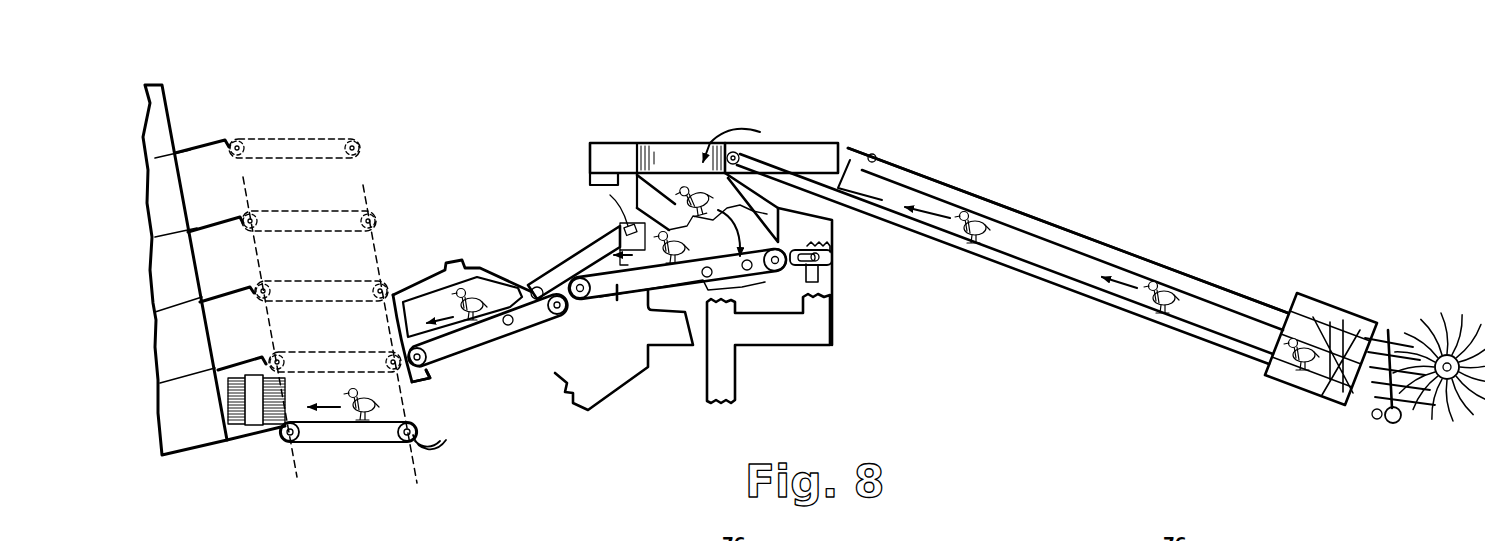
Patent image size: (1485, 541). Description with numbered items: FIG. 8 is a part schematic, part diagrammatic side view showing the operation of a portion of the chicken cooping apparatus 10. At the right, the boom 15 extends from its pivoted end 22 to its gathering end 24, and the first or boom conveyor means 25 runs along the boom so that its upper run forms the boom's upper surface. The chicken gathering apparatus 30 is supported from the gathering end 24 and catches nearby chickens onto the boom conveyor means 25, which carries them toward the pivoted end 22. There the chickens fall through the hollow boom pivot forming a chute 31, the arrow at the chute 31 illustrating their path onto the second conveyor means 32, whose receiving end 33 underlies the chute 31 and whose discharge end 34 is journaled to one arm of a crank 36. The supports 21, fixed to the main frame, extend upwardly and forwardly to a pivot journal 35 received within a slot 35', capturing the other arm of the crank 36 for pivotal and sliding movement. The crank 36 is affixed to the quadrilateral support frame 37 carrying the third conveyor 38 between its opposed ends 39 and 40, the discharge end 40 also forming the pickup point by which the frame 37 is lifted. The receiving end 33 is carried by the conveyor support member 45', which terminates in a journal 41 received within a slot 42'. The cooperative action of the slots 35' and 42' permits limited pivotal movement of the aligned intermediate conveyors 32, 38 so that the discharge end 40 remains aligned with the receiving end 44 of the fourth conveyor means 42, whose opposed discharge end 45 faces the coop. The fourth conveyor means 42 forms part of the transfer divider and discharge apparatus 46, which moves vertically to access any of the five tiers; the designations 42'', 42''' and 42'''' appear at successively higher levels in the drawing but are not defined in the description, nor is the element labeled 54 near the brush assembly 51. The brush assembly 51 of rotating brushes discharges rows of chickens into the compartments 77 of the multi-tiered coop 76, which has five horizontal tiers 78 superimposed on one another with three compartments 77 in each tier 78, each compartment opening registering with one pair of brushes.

The chicken cooping apparatus 10 is at (1077, 170).
The boom 15 is at (1066, 298).
The support members 21 is at (612, 381).
The pivoted end of boom 22 is at (586, 137).
The boom gathering end 24 is at (1332, 296).
The boom conveyor means 25 is at (1049, 262).
The chicken gathering apparatus 30 is at (1448, 298).
The chute 31 is at (688, 150).
The second conveyor means 32 is at (677, 290).
The receiving end 33 is at (777, 272).
The discharge end 34 is at (592, 297).
The pivot journal 35 is at (614, 232).
The slot 35' is at (585, 200).
The crank 36 is at (572, 245).
The support frame 37 is at (487, 262).
The third conveyor 38 is at (499, 359).
The end of third conveyor 39 is at (558, 315).
The discharge end of third conveyor 40 is at (435, 309).
The journal 41 is at (827, 243).
The fourth conveyor means 42 is at (348, 428).
The slot 42' is at (586, 309).
The drawer conveyor (third position) 42'' is at (321, 282).
The drawer conveyor (fourth position) 42''' is at (309, 206).
The drawer conveyor (fifth position) 42'''' is at (294, 134).
The receiving end 44 is at (413, 421).
The discharge end 45 is at (280, 453).
The conveyor support member 45' is at (835, 274).
The transfer divider and discharge apparatus 46 is at (258, 342).
The brush assembly 51 is at (219, 410).
The pusher 54 is at (282, 390).
The multi-tiered coop 76 is at (202, 461).
The compartments 77 is at (431, 447).
The horizontal tiers 78 is at (421, 381).